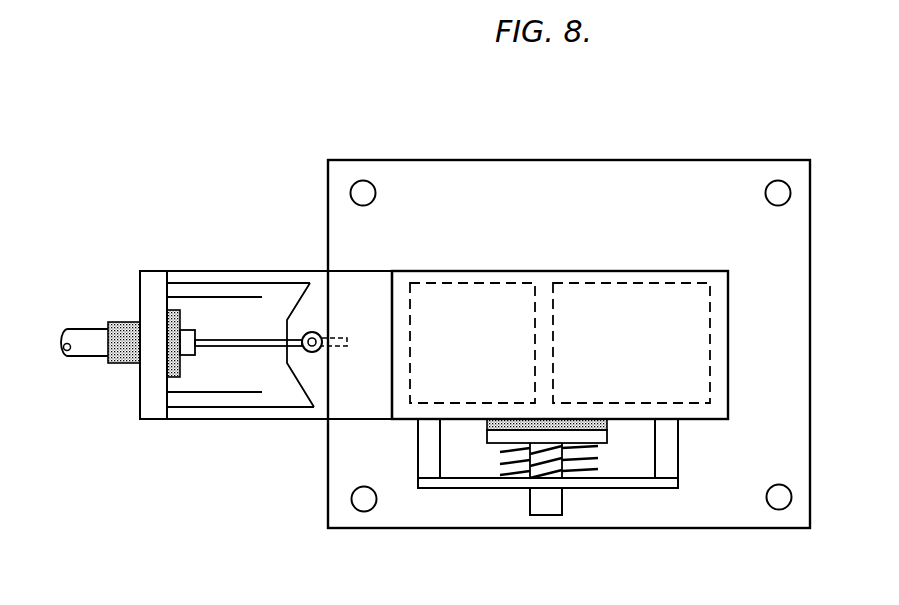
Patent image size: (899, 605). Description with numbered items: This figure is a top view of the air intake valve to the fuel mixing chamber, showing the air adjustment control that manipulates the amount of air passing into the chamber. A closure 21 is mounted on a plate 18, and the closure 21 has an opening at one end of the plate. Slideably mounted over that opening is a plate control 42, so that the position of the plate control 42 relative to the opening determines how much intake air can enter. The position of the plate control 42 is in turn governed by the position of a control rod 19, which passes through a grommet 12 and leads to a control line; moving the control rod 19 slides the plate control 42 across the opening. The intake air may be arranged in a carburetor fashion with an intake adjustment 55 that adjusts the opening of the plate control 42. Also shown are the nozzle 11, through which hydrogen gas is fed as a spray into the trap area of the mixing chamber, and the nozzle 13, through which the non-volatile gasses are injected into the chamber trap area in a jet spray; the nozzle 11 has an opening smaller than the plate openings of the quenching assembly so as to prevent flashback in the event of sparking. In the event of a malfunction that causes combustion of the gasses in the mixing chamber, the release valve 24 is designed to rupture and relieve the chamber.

The nozzle 11 is at (211, 276).
The grommet 12 is at (128, 322).
The nozzle 13 is at (82, 338).
The plate 18 is at (795, 277).
The control rod 19 is at (168, 309).
The closure 21 is at (697, 345).
The release valve 24 is at (545, 505).
The plate control 42 is at (343, 388).
The intake adjustment 55 is at (200, 410).